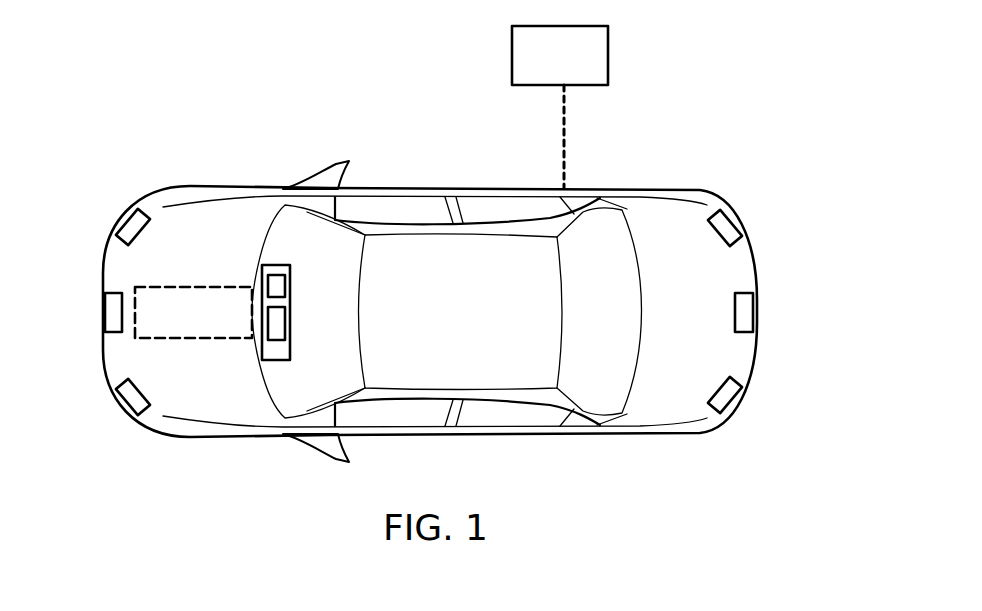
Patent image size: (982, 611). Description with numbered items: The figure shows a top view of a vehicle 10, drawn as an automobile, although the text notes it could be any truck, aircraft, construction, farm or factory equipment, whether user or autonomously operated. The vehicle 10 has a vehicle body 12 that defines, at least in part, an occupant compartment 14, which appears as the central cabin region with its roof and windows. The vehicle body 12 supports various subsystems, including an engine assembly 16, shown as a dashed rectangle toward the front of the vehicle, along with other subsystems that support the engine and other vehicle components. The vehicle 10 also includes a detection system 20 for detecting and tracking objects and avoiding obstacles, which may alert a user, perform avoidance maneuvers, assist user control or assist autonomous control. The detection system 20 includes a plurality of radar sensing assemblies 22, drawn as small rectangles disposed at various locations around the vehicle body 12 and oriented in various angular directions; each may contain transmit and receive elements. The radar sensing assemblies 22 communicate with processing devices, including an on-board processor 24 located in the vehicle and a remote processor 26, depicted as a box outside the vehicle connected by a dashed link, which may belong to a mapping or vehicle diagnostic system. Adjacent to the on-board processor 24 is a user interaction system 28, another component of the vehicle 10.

The vehicle 10 is at (281, 186).
The vehicle body 12 is at (628, 415).
The occupant compartment 14 is at (491, 378).
The engine assembly 16 is at (170, 287).
The detection system 20 is at (413, 152).
The radar sensing assemblies 22 is at (123, 222).
The on-board processor 24 is at (280, 285).
The remote processor 26 is at (598, 52).
The user interaction system 28 is at (280, 322).